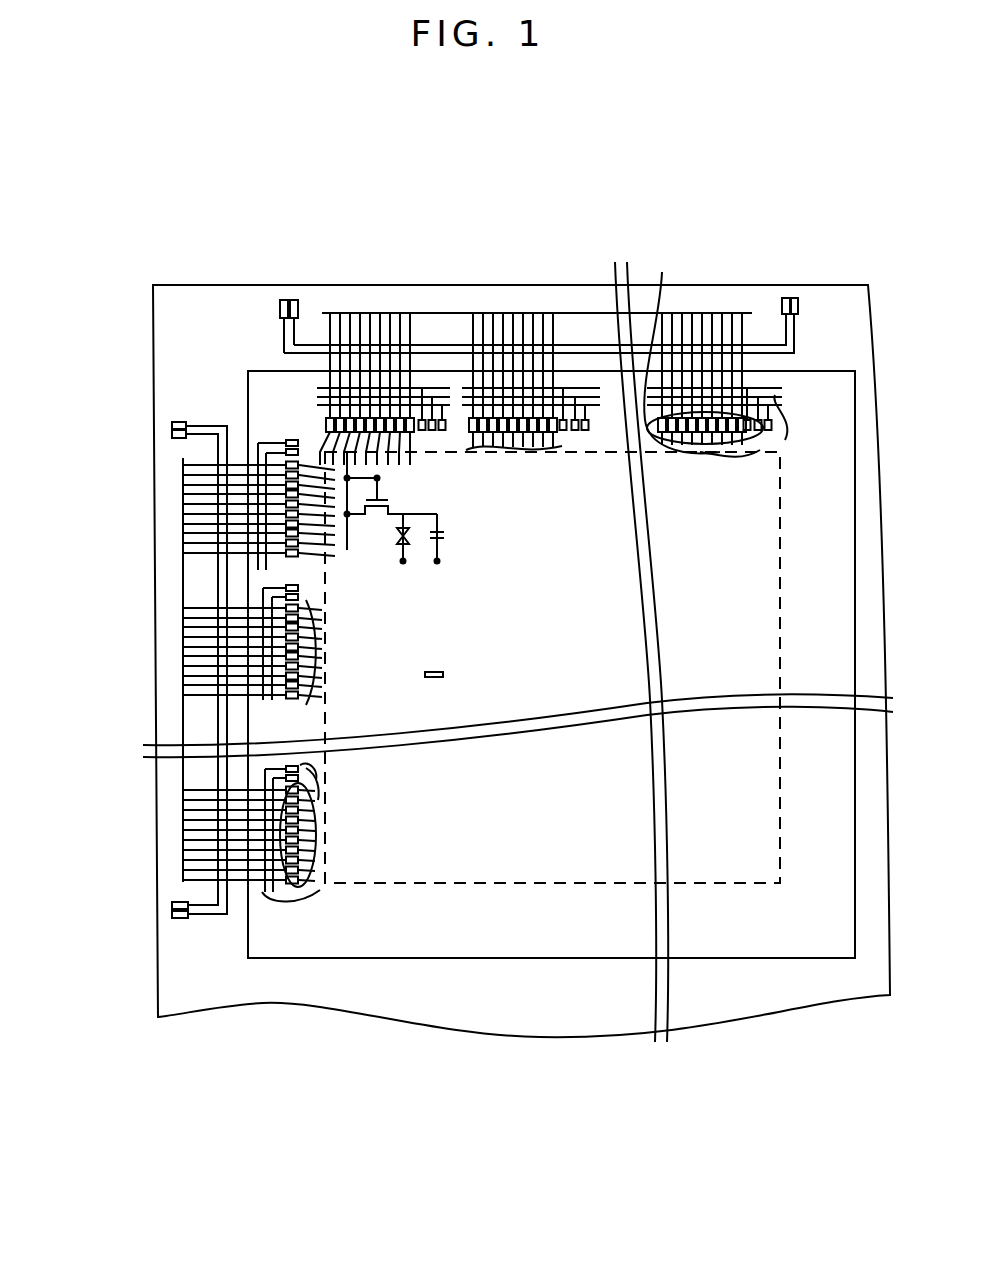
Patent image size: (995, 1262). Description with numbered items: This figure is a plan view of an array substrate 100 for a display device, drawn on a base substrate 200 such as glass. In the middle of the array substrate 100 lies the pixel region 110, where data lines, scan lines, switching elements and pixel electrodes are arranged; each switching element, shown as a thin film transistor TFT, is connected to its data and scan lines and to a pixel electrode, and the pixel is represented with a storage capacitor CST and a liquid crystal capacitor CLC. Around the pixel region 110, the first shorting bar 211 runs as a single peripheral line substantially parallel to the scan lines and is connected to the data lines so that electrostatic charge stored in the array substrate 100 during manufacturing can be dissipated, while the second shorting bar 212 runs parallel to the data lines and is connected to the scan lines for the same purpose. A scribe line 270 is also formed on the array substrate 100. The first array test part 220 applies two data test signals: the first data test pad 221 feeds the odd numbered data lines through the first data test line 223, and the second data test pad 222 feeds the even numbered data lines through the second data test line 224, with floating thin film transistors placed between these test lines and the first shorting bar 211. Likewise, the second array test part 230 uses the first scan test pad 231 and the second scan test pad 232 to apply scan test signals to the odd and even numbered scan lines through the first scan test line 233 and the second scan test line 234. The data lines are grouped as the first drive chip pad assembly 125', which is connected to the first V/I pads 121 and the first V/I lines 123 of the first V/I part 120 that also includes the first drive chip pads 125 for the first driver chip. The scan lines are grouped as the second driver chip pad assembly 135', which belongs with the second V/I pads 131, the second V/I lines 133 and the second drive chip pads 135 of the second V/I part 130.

The array substrate 100 is at (565, 936).
The pixel region 110 is at (700, 848).
The first visual inspection part 120 is at (770, 522).
The first V/I pads 121 is at (760, 450).
The first V/I lines 123 is at (785, 440).
The first drive chip pads 125 is at (698, 465).
The first drive chip pad assembly 125' is at (680, 351).
The second visual inspection part 130 is at (440, 882).
The second V/I pads 131 is at (306, 768).
The second V/I lines 133 is at (262, 892).
The second drive chip pads 135 is at (355, 835).
The second driver chip pad assembly 135' is at (196, 775).
The base substrate 200 is at (782, 970).
The first shorting bar 211 is at (450, 313).
The second shorting bar 212 is at (183, 578).
The first array test part 220 is at (388, 216).
The first data test pad 221 is at (284, 300).
The second data test pad 222 is at (296, 300).
The first data test line 223 is at (285, 352).
The second data test line 224 is at (300, 325).
The second array test part 230 is at (80, 490).
The first scan test pad 231 is at (172, 436).
The second scan test pad 232 is at (172, 425).
The first scan test line 233 is at (172, 440).
The second scan test line 234 is at (204, 423).
The scribe line 270 is at (835, 960).
The thin film transistor TFT is at (392, 505).
The storage capacitor CST is at (450, 532).
The liquid crystal capacitor CLC is at (394, 540).